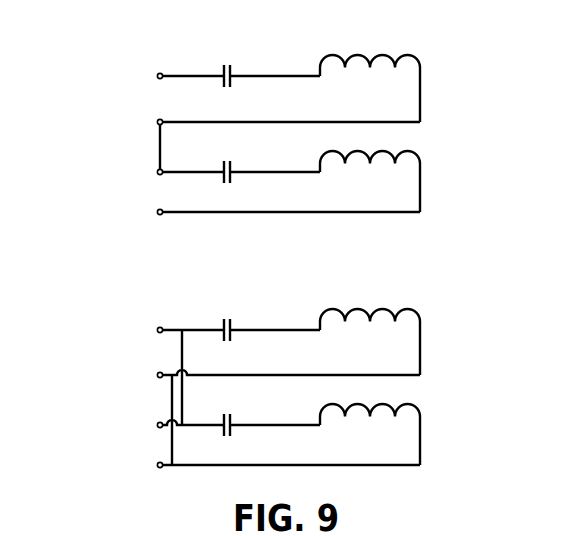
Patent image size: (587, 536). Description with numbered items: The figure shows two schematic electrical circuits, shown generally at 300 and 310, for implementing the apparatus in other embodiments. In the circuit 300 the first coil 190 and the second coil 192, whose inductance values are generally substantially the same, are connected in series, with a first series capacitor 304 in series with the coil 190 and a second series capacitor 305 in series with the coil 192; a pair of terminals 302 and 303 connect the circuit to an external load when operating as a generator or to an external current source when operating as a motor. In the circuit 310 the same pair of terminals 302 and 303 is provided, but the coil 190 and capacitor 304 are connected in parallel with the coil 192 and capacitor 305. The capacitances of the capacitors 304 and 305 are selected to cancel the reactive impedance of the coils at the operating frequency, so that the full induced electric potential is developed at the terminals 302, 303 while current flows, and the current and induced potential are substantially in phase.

The electrical circuit 300 is at (140, 46).
The electrical circuit 310 is at (140, 294).
The terminal 302 is at (157, 79).
The terminal 303 is at (157, 209).
The first series capacitor 304 is at (232, 71).
The second series capacitor 305 is at (232, 176).
The first coil 190 is at (422, 63).
The second coil 192 is at (422, 158).